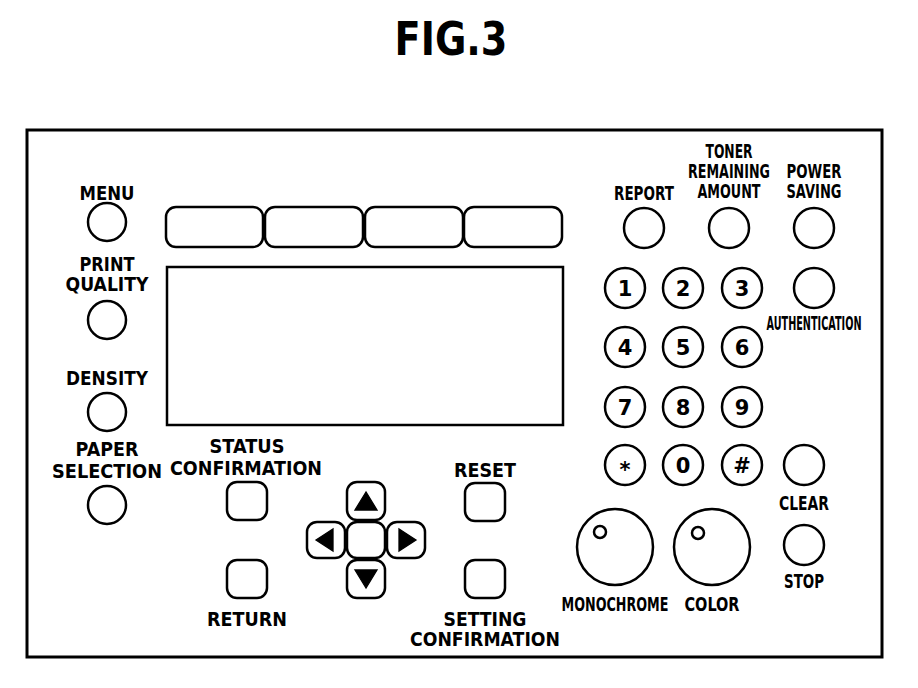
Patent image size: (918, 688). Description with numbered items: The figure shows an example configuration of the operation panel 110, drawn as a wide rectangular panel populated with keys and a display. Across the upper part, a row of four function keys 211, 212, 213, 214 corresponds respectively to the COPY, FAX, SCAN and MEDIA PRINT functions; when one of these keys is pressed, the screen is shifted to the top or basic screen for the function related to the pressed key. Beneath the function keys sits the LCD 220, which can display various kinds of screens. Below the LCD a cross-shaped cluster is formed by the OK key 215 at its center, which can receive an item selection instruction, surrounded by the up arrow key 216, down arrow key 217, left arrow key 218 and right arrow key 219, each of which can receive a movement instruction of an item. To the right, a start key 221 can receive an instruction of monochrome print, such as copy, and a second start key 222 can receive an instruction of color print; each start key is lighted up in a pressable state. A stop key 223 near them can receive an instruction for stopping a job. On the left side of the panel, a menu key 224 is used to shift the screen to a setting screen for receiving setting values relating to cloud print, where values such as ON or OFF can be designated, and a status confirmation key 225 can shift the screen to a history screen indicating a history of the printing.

The operation panel 110 is at (181, 130).
The function key 211 is at (192, 207).
The function key 212 is at (291, 207).
The function key 213 is at (391, 207).
The function key 214 is at (490, 207).
The OK key 215 is at (386, 521).
The up arrow key 216 is at (366, 482).
The down arrow key 217 is at (347, 580).
The left arrow key 218 is at (307, 539).
The right arrow key 219 is at (425, 539).
The LCD 220 is at (563, 277).
The start key 221 is at (590, 516).
The start key 222 is at (684, 526).
The stop key 223 is at (852, 528).
The menu key 224 is at (127, 219).
The status confirmation key 225 is at (227, 498).